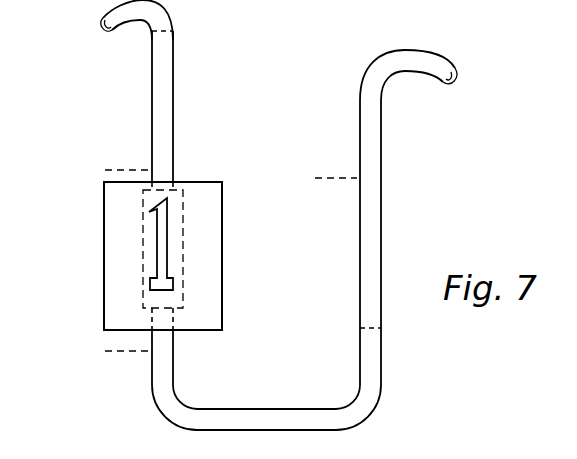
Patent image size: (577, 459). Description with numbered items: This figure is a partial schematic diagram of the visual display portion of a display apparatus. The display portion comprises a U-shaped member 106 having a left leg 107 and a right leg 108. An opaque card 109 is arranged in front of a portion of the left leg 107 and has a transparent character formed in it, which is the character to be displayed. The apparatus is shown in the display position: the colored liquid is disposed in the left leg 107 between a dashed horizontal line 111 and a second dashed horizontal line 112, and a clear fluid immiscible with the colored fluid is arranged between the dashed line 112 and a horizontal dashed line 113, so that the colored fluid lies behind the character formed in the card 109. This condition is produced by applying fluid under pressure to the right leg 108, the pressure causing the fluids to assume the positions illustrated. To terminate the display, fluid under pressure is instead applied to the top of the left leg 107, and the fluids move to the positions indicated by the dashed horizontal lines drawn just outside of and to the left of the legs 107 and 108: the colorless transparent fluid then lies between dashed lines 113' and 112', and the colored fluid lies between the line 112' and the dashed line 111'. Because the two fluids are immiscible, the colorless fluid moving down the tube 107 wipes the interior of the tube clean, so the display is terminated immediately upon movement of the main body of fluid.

The U-shaped member 106 is at (277, 401).
The left leg 107 is at (163, 90).
The right leg 108 is at (382, 240).
The opaque card 109 is at (104, 250).
The dashed horizontal line 111 is at (401, 341).
The dashed line 111' is at (322, 166).
The second dashed horizontal line 112 is at (182, 232).
The dashed line 112' is at (103, 366).
The horizontal dashed line 113 is at (166, 31).
The dashed line 113' is at (103, 157).